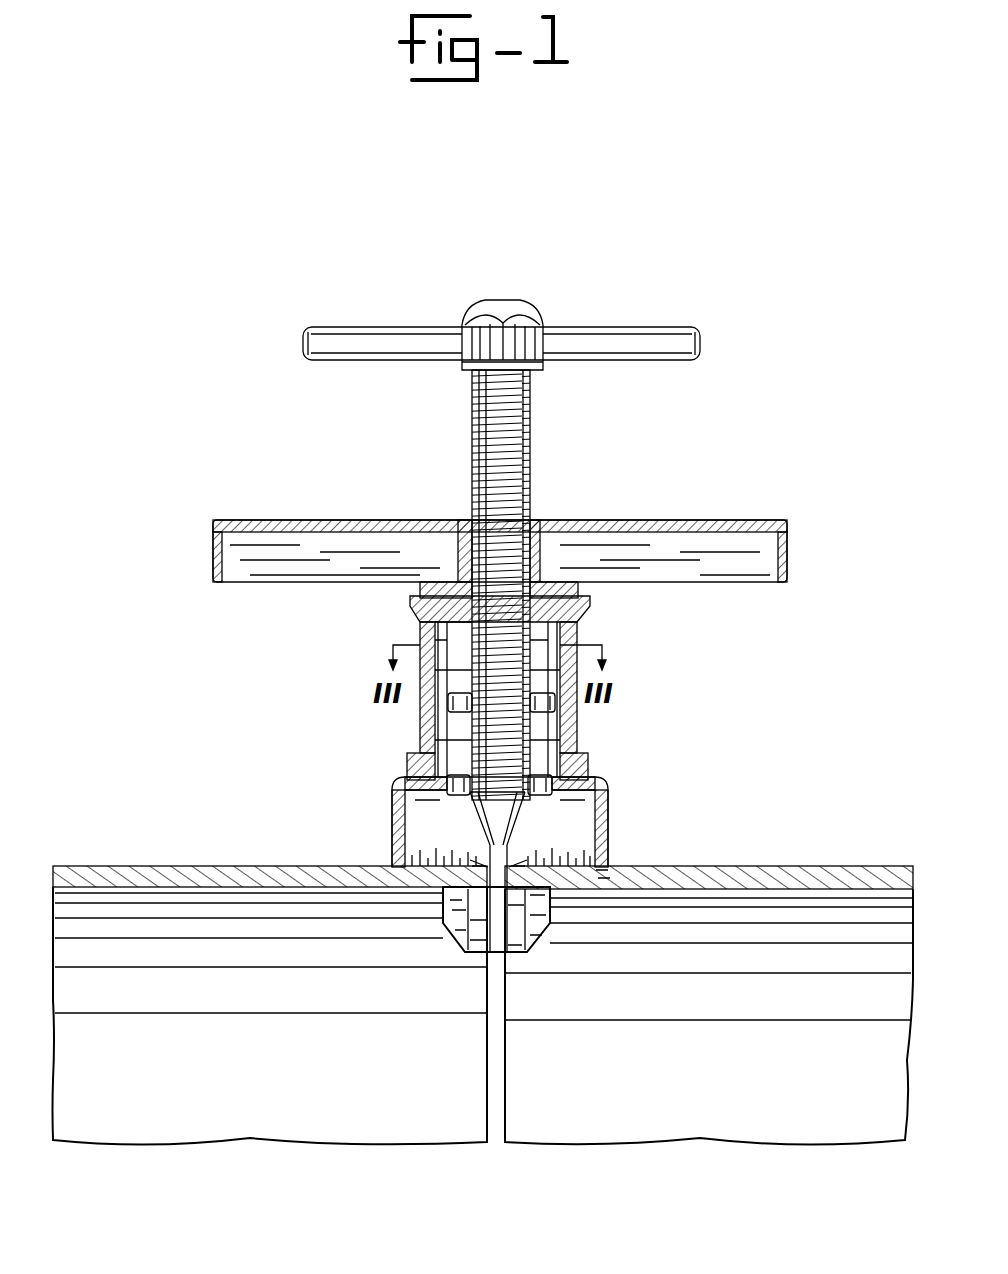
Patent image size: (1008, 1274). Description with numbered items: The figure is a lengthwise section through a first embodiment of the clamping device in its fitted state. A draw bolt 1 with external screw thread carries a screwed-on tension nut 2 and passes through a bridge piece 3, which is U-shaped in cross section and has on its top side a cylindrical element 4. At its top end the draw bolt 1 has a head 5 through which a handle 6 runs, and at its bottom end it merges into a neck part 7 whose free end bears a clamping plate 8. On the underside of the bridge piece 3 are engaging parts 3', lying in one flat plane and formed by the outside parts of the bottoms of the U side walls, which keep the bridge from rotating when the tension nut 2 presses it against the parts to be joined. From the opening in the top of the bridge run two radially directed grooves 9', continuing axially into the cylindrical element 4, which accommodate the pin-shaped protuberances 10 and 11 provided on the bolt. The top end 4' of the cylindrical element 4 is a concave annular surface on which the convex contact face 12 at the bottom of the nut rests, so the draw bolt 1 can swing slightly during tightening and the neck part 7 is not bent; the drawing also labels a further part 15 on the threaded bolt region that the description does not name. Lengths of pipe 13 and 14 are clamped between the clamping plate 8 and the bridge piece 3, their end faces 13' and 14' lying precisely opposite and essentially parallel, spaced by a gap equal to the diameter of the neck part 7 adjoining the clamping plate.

The draw bolt 1 is at (532, 462).
The tension nut 2 is at (712, 528).
The bridge piece 3 is at (516, 822).
The engaging parts 3' is at (622, 856).
The cylindrical element 4 is at (517, 701).
The top end of the cylindrical element 4' is at (523, 610).
The head 5 is at (528, 323).
The handle 6 is at (645, 340).
The neck part 7 is at (519, 840).
The clamping plate 8 is at (462, 940).
The radially directed grooves 9' is at (465, 699).
The pin-shaped protuberance 10 is at (462, 806).
The pin-shaped protuberance 11 is at (556, 736).
The convex contact face 12 is at (465, 617).
The length of pipe 13 is at (709, 985).
The end face of the length of pipe 13' is at (546, 851).
The length of pipe 14 is at (270, 985).
The end face of the length of pipe 14' is at (463, 851).
The threaded bushing 15 is at (522, 527).